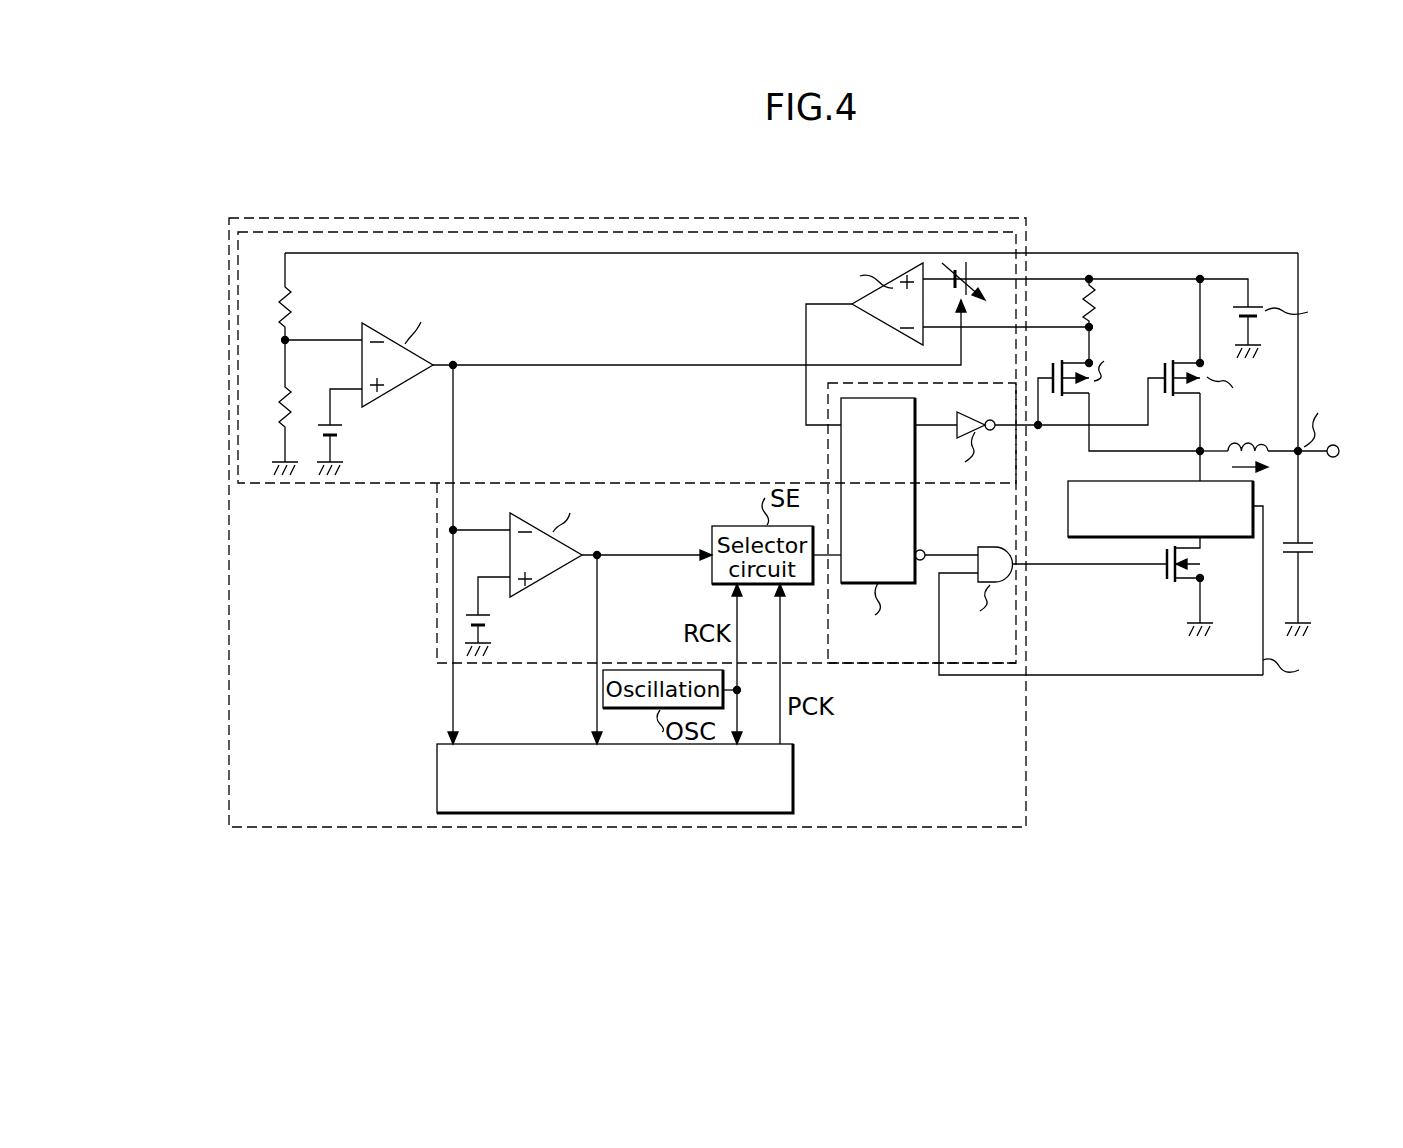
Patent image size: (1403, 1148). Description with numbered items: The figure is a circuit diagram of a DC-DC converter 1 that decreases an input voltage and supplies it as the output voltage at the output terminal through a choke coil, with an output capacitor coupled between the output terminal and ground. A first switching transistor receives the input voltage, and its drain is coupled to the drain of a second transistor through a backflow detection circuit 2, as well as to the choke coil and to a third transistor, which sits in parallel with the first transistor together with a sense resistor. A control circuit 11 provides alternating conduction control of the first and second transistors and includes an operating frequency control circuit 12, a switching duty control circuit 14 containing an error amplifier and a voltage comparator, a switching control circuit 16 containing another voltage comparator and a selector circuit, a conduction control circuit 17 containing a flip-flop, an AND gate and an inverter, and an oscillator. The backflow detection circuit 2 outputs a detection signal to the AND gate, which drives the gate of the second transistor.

The DC-DC converter 1 is at (1111, 213).
The backflow detection circuit 2 is at (1078, 480).
The control circuit 11 is at (1028, 762).
The operating frequency control circuit 12 is at (793, 780).
The switching duty control circuit 14 is at (594, 232).
The switching control circuit 16 is at (436, 587).
The conduction control circuit 17 is at (893, 663).